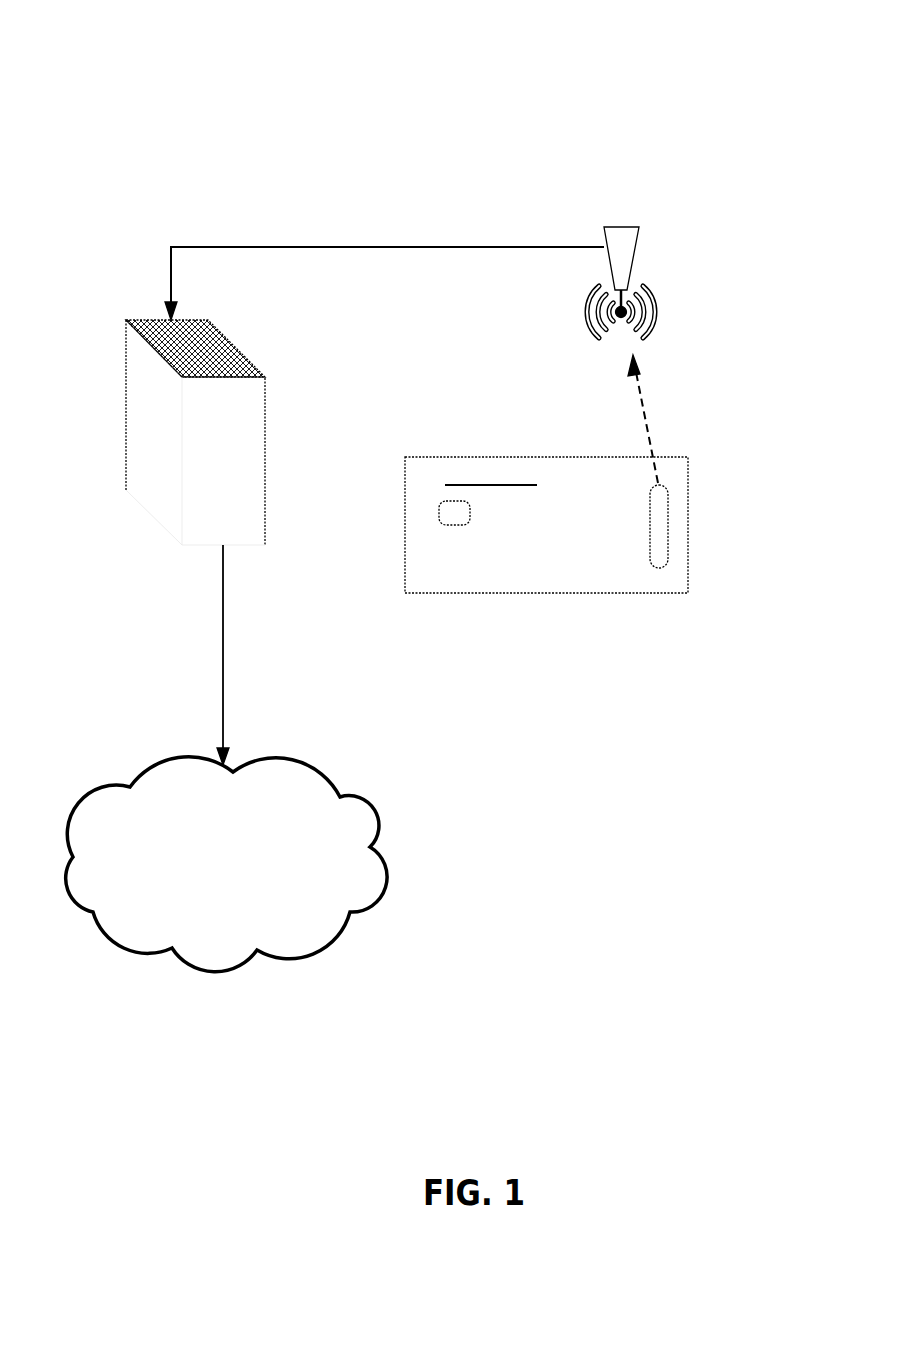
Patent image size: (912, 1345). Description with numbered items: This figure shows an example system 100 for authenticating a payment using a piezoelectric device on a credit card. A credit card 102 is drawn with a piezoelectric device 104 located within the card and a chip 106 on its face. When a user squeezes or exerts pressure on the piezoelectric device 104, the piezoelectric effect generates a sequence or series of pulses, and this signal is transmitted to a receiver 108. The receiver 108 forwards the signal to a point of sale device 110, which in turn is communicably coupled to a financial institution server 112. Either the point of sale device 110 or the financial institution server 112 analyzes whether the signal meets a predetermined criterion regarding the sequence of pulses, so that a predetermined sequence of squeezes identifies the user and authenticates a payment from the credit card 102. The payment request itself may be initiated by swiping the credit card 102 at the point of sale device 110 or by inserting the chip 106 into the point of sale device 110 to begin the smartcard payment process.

The system 100 is at (108, 47).
The credit card 102 is at (700, 560).
The piezoelectric device 104 is at (668, 505).
The chip 106 is at (437, 508).
The receiver 108 is at (638, 227).
The point of sale device 110 is at (170, 335).
The financial institution server 112 is at (226, 864).